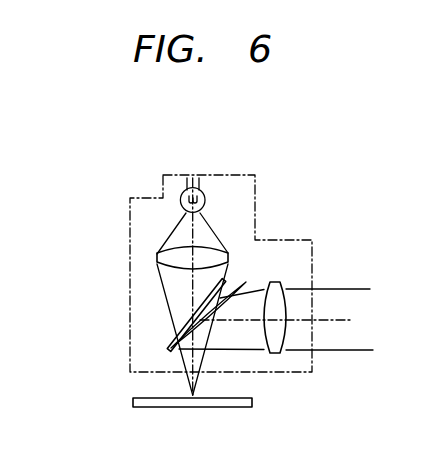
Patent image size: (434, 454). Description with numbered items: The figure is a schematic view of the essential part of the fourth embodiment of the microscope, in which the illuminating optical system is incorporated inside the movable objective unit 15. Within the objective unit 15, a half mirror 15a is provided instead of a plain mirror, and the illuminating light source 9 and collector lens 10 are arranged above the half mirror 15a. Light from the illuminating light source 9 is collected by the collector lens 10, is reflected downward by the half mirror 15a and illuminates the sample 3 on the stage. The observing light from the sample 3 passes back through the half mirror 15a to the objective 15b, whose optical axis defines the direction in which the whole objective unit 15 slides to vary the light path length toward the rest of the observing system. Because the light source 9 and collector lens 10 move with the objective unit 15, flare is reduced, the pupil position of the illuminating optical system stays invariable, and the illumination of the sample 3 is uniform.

The sample 3 is at (252, 402).
The illuminating light source 9 is at (191, 178).
The collector lens 10 is at (157, 257).
The objective unit 15 is at (265, 178).
The half mirror 15a is at (182, 326).
The objective 15b is at (283, 296).